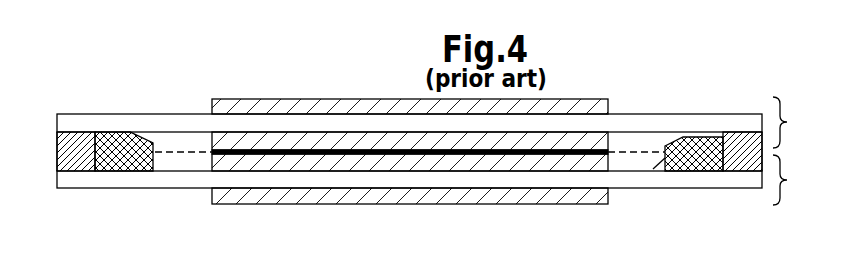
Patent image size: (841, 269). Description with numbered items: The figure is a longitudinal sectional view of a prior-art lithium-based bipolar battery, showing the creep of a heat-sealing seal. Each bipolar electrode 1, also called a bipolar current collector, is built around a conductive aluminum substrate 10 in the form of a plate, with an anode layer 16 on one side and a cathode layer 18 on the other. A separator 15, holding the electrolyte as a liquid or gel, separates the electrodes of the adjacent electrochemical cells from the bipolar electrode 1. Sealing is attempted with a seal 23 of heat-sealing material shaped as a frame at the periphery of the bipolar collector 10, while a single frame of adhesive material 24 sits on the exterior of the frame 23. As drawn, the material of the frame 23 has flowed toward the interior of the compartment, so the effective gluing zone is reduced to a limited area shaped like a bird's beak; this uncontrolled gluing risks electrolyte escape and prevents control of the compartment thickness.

The bipolar electrode 1 is at (790, 151).
The conductive aluminum substrate 10 is at (683, 122).
The separator 15 is at (190, 152).
The anode layer 16 is at (362, 140).
The cathode layer 18 is at (327, 103).
The heat-sealing seal 23 is at (133, 140).
The frame of adhesive material 24 is at (66, 157).